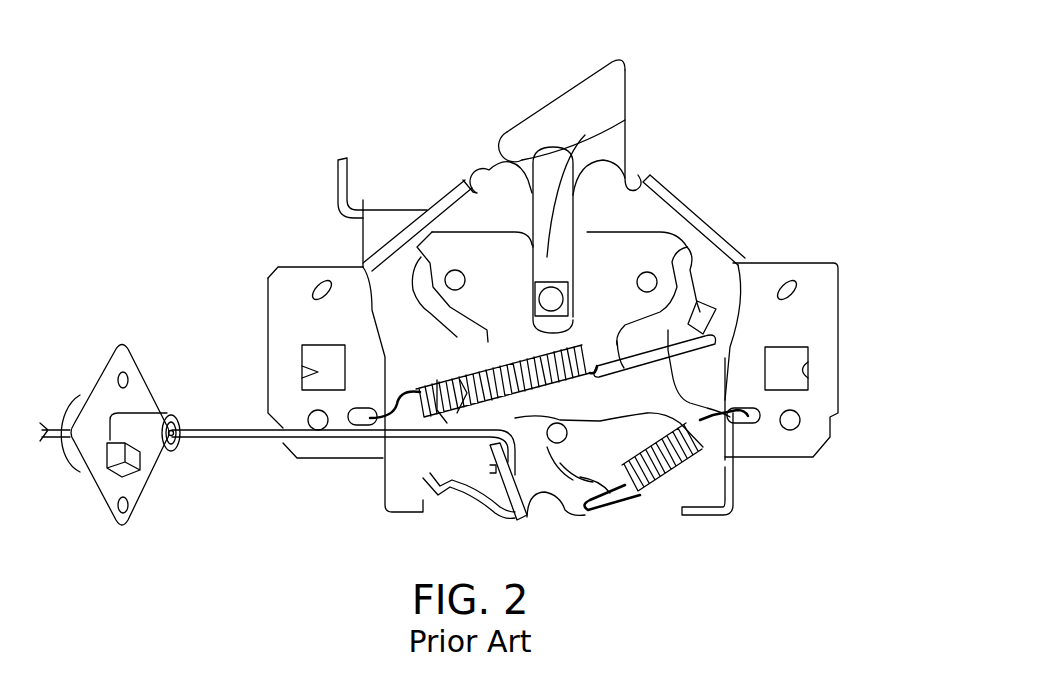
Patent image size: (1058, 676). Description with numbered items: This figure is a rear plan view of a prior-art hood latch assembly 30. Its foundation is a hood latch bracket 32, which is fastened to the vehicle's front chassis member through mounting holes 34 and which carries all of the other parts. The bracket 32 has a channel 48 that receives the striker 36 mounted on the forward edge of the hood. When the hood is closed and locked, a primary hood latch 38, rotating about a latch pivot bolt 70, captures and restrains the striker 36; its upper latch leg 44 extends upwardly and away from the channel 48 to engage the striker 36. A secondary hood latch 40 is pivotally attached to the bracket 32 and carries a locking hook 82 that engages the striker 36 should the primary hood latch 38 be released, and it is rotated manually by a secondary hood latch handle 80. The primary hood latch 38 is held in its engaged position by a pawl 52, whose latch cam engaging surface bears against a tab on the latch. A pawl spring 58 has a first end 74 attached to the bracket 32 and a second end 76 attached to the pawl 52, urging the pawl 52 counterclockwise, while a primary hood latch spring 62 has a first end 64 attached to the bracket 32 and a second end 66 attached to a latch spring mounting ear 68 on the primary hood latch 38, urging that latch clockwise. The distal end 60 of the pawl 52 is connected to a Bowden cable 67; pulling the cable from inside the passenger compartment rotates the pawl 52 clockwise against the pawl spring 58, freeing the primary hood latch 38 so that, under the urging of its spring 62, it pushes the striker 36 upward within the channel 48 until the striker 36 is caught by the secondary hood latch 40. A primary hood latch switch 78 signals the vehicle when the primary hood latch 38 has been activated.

The hood latch assembly 30 is at (752, 148).
The hood latch bracket 32 is at (822, 297).
The mounting holes 34 is at (300, 378).
The striker 36 is at (553, 297).
The primary hood latch 38 is at (725, 358).
The secondary hood latch 40 is at (603, 73).
The upper latch leg 44 is at (585, 135).
The channel 48 is at (533, 160).
The pawl 52 is at (567, 433).
The pawl spring 58 is at (650, 490).
The distal end 60 is at (523, 518).
The primary hood latch spring 62 is at (420, 385).
The first end 64 is at (397, 406).
The second end 66 is at (631, 355).
The Bowden cable 67 is at (43, 437).
The latch spring mounting ear 68 is at (700, 305).
The latch pivot bolt 70 is at (648, 280).
The first end 74 is at (727, 428).
The second end 76 is at (620, 497).
The primary hood latch switch 78 is at (133, 460).
The secondary hood latch handle 80 is at (338, 177).
The locking hook 82 is at (543, 118).